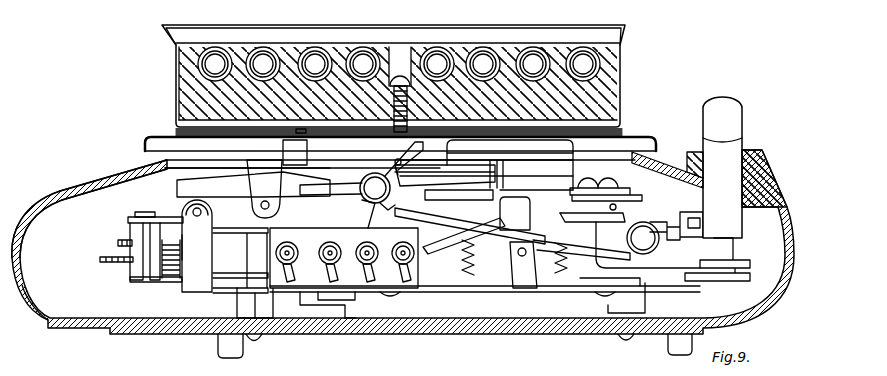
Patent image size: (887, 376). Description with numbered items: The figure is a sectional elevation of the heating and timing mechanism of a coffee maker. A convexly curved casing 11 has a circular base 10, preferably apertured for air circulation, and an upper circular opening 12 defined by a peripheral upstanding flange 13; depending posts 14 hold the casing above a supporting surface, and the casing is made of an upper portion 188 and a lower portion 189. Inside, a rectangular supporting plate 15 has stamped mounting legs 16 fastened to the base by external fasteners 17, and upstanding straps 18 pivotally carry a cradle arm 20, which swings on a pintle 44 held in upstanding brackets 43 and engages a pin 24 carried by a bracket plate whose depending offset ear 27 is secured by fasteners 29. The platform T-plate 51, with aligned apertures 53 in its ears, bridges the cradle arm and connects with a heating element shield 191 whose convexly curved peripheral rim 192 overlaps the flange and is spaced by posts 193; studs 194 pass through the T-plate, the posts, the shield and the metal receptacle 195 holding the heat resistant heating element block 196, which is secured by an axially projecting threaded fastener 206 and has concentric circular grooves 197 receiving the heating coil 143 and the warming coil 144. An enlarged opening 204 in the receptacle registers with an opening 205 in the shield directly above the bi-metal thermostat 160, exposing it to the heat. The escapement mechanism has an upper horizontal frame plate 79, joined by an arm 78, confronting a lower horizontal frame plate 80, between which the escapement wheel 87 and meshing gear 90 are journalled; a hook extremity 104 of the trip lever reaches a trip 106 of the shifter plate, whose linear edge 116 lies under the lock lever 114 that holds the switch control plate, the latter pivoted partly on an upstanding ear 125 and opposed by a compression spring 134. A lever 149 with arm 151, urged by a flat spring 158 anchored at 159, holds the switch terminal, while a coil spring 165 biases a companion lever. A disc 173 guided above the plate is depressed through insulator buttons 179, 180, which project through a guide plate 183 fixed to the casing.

The circular base 10 is at (513, 335).
The casing 11 is at (36, 196).
The upper circular opening 12 is at (205, 161).
The peripheral upstanding flange 13 is at (160, 162).
The depending posts 14 is at (218, 347).
The supporting plate 15 is at (468, 292).
The mounting legs 16 is at (243, 303).
The external fasteners 17 is at (262, 339).
The upstanding straps 18 is at (192, 277).
The cradle arm 20 is at (236, 192).
The pin 24 is at (620, 205).
The depending offset ear 27 is at (592, 279).
The fasteners 29 is at (392, 296).
The upstanding brackets 43 is at (189, 235).
The pintle 44 is at (203, 210).
The platform T-plate 51 is at (357, 182).
The aligned apertures 53 is at (268, 201).
The arm 78 is at (133, 217).
The upper horizontal frame plate 79 is at (127, 222).
The lower horizontal frame plate 80 is at (137, 282).
The escapement wheel 87 is at (100, 259).
The gear 90 is at (116, 243).
The hook extremity 104 is at (310, 305).
The trip 106 is at (348, 310).
The lever 114 is at (603, 233).
The linear edge 116 is at (648, 228).
The upstanding ear 125 is at (513, 268).
The compression spring 134 is at (466, 261).
The heating coil 143 is at (263, 49).
The warming coil 144 is at (363, 49).
The lever 149 is at (305, 242).
The arm 151 is at (400, 228).
The flat spring 158 is at (487, 192).
The anchorage 159 is at (604, 183).
The bi-metal thermostat 160 is at (577, 144).
The coil spring 165 is at (447, 183).
The disc 173 is at (740, 262).
The insulator button 179 is at (730, 157).
The warming coil button 180 is at (730, 112).
The guide plate 183 is at (690, 160).
The upper portion 188 is at (80, 187).
The lower portion 189 is at (77, 332).
The heating element shield 191 is at (153, 138).
The convexly curved peripheral rim 192 is at (143, 147).
The posts 193 is at (290, 150).
The studs 194 is at (300, 131).
The metal receptacle 195 is at (173, 100).
The heating element block 196 is at (187, 82).
The concentric circular grooves 197 is at (187, 57).
The enlarged opening 204 is at (600, 104).
The opening 205 is at (578, 128).
The threaded fastener 206 is at (400, 74).